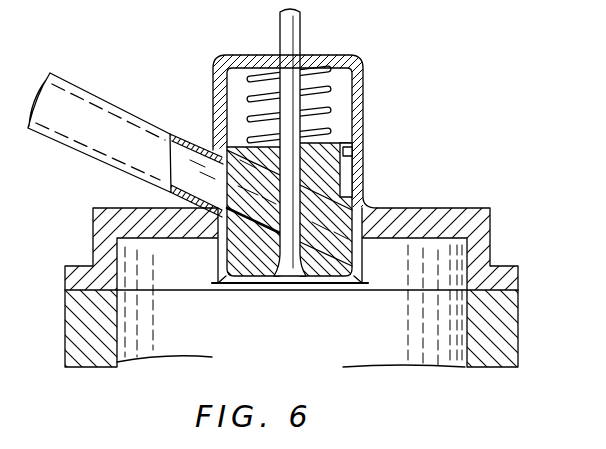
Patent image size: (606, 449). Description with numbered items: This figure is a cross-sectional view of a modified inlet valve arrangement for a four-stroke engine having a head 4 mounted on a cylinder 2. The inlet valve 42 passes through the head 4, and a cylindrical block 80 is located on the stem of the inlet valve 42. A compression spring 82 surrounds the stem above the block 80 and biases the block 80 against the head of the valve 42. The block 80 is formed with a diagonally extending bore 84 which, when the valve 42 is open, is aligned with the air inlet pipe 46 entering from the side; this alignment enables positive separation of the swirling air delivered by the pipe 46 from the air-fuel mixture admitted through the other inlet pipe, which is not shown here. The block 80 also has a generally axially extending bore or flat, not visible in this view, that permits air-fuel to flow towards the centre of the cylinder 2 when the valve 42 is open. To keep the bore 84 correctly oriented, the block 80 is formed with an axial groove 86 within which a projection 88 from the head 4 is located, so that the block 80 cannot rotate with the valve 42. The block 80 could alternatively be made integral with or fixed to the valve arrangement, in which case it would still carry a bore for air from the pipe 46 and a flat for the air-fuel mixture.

The cylinder 2 is at (495, 328).
The head 4 is at (508, 277).
The inlet valve 42 is at (298, 280).
The inlet pipe 46 is at (133, 152).
The cylindrical block 80 is at (224, 140).
The compression spring 82 is at (333, 90).
The diagonally extending bore 84 is at (266, 217).
The axial groove 86 is at (346, 184).
The projection 88 is at (353, 150).